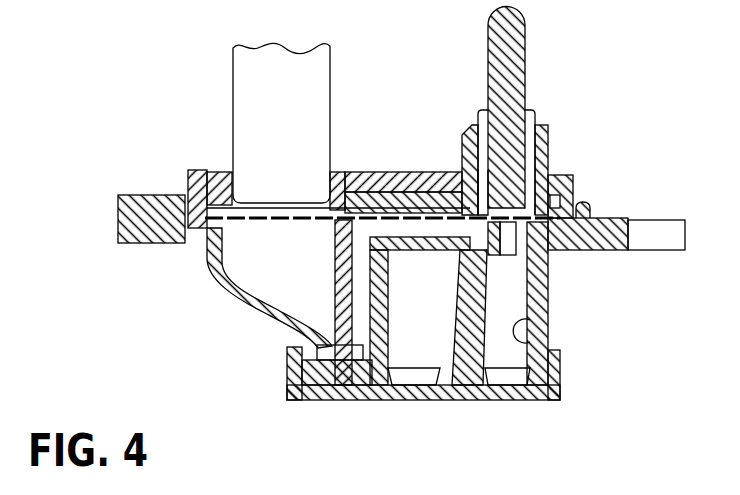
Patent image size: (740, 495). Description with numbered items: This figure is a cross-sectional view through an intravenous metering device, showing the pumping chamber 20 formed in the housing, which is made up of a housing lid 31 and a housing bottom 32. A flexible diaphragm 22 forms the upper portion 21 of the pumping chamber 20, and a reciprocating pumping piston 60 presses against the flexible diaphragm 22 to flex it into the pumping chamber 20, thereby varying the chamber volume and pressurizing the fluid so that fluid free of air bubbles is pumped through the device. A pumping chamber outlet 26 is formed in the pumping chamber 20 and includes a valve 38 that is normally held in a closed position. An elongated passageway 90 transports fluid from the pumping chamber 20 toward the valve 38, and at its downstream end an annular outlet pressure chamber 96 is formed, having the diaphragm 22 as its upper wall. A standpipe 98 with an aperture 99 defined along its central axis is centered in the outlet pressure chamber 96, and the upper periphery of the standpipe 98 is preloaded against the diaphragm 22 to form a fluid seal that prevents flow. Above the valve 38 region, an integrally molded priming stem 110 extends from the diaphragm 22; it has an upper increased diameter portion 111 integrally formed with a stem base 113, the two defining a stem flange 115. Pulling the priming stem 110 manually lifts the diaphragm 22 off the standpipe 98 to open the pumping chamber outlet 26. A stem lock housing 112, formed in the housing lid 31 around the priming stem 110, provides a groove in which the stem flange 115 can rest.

The pumping chamber 20 is at (277, 280).
The upper portion 21 is at (252, 213).
The flexible diaphragm 22 is at (187, 170).
The pumping chamber outlet 26 is at (345, 348).
The housing lid 31 is at (190, 177).
The housing bottom 32 is at (465, 397).
The valve 38 is at (574, 210).
The pumping piston 60 is at (258, 62).
The elongated passageway 90 is at (410, 230).
The annular outlet pressure chamber 96 is at (470, 193).
The standpipe 98 is at (530, 235).
The aperture 99 is at (540, 336).
The priming stem 110 is at (510, 72).
The upper increased diameter portion 111 is at (525, 112).
The stem lock housing 112 is at (547, 135).
The stem base 113 is at (520, 205).
The stem flange 115 is at (483, 168).